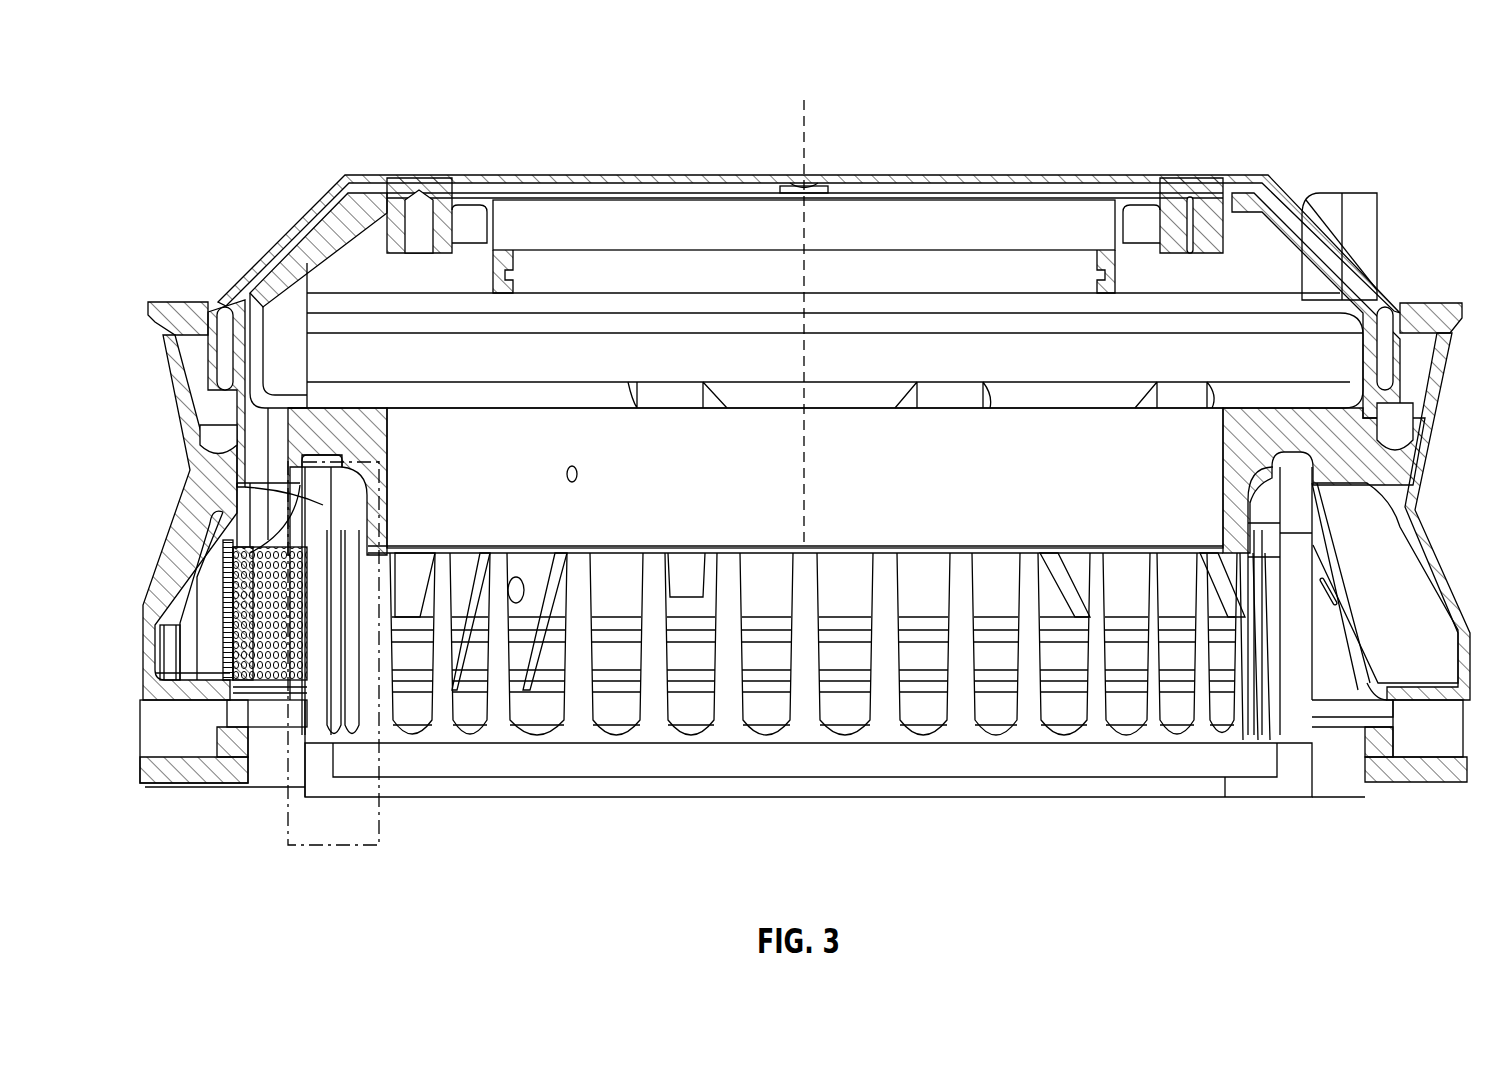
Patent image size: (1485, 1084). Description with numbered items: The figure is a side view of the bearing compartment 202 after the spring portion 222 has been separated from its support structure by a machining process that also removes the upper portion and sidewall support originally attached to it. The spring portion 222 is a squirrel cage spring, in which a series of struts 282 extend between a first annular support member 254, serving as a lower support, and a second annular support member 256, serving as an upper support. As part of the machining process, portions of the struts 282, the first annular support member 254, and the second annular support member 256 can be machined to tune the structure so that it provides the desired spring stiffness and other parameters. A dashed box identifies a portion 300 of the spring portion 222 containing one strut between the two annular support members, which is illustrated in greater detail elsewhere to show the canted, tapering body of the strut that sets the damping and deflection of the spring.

The bearing compartment 202 is at (809, 437).
The spring portion 222 is at (540, 750).
The first annular support member 254 is at (318, 787).
The second annular support member 256 is at (217, 440).
The struts 282 is at (720, 720).
The portion 300 is at (330, 846).